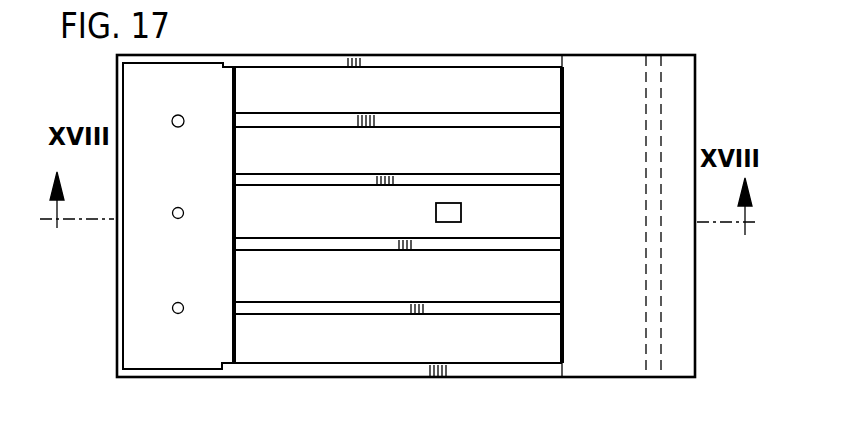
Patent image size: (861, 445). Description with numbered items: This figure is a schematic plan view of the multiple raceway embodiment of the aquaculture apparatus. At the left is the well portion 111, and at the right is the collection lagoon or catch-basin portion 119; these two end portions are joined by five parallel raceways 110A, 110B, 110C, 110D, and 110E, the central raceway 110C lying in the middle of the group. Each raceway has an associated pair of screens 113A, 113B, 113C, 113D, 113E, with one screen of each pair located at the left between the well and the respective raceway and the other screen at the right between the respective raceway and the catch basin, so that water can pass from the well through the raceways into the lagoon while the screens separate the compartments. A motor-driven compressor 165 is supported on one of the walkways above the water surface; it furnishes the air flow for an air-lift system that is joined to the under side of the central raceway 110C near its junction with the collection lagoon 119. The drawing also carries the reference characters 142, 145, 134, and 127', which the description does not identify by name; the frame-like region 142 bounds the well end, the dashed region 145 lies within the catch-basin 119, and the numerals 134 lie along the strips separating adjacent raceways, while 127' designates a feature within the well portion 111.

The housing / drawer frame 142 is at (206, 55).
The collection lagoon or catch-basin portion 119 is at (608, 62).
The hidden panel / partition 145 is at (645, 188).
The shelf dividers 134 is at (465, 57).
The raceway 110A is at (328, 82).
The raceway 110B is at (356, 163).
The central raceway 110C is at (368, 228).
The raceway 110D is at (376, 290).
The raceway 110E is at (384, 352).
The pair of screens 113A is at (237, 91).
The pair of screens 113B is at (237, 157).
The pair of screens 113C is at (237, 205).
The pair of screens 113D is at (237, 285).
The pair of screens 113E is at (237, 333).
The motor-driven compressor 165 is at (436, 212).
The well portion 111 is at (184, 108).
The mounting hole 127' is at (164, 241).